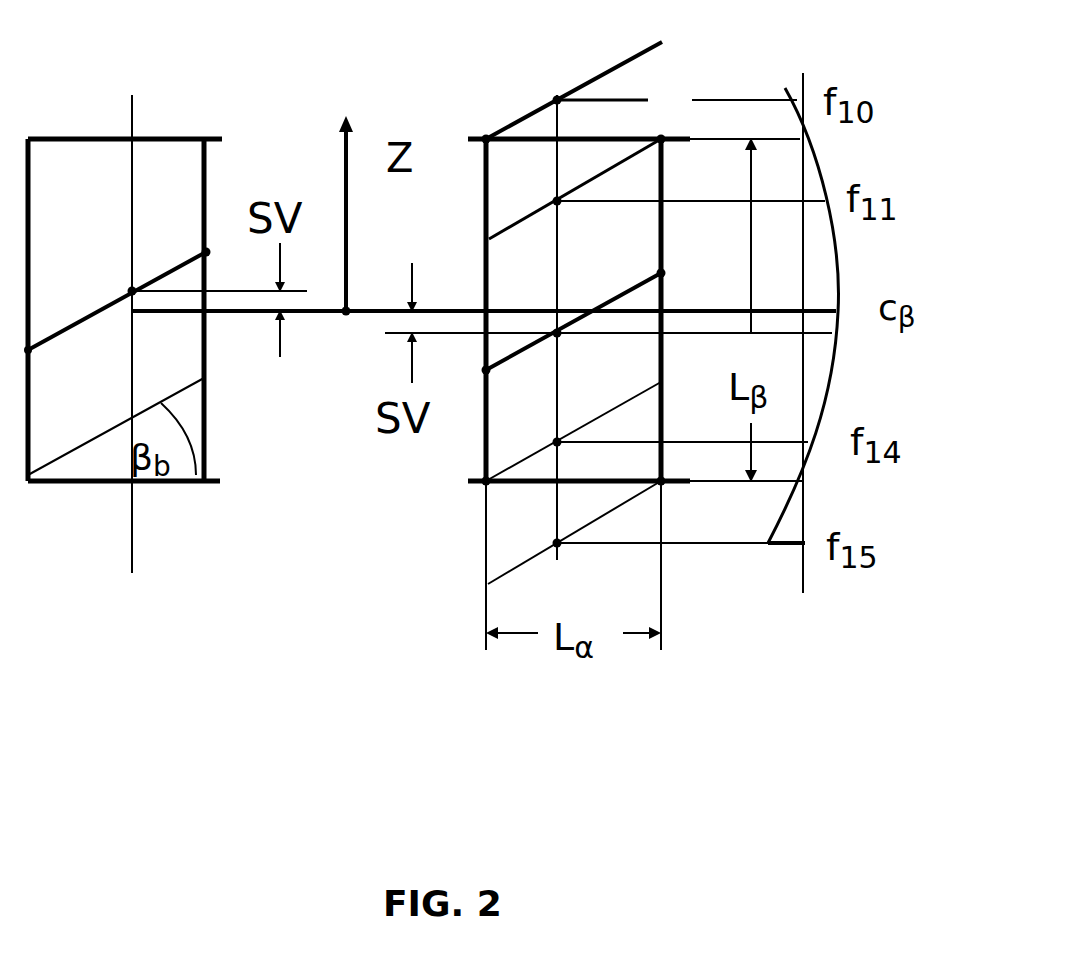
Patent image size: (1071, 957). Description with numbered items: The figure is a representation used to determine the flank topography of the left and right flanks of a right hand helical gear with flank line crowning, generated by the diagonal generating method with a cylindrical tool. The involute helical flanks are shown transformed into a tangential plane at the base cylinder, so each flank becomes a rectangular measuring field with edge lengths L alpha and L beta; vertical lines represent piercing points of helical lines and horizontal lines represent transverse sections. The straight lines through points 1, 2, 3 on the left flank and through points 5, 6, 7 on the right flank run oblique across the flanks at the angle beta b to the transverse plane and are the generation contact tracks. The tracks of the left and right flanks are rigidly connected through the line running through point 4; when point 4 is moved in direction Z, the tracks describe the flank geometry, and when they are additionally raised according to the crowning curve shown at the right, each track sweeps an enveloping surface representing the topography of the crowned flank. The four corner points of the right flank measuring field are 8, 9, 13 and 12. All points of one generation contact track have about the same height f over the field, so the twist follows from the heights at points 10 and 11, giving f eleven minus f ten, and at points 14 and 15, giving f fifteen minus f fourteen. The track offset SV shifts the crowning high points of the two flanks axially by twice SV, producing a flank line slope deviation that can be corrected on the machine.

The generation contact track point 1 is at (115, 303).
The generation contact track point 2 is at (116, 275).
The generation contact track point 3 is at (192, 232).
The point 4 is at (345, 336).
The generation contact track point 5 is at (572, 343).
The generation contact track point 6 is at (571, 354).
The generation contact track point 7 is at (679, 277).
The corner point of measuring field 8 is at (565, 93).
The corner point of measuring field 9 is at (659, 118).
The generation contact track point 10 is at (532, 87).
The generation contact track point 11 is at (531, 184).
The corner point of measuring field 12 is at (509, 505).
The corner point of measuring field 13 is at (685, 503).
The generation contact track point 14 is at (537, 426).
The generation contact track point 15 is at (586, 569).